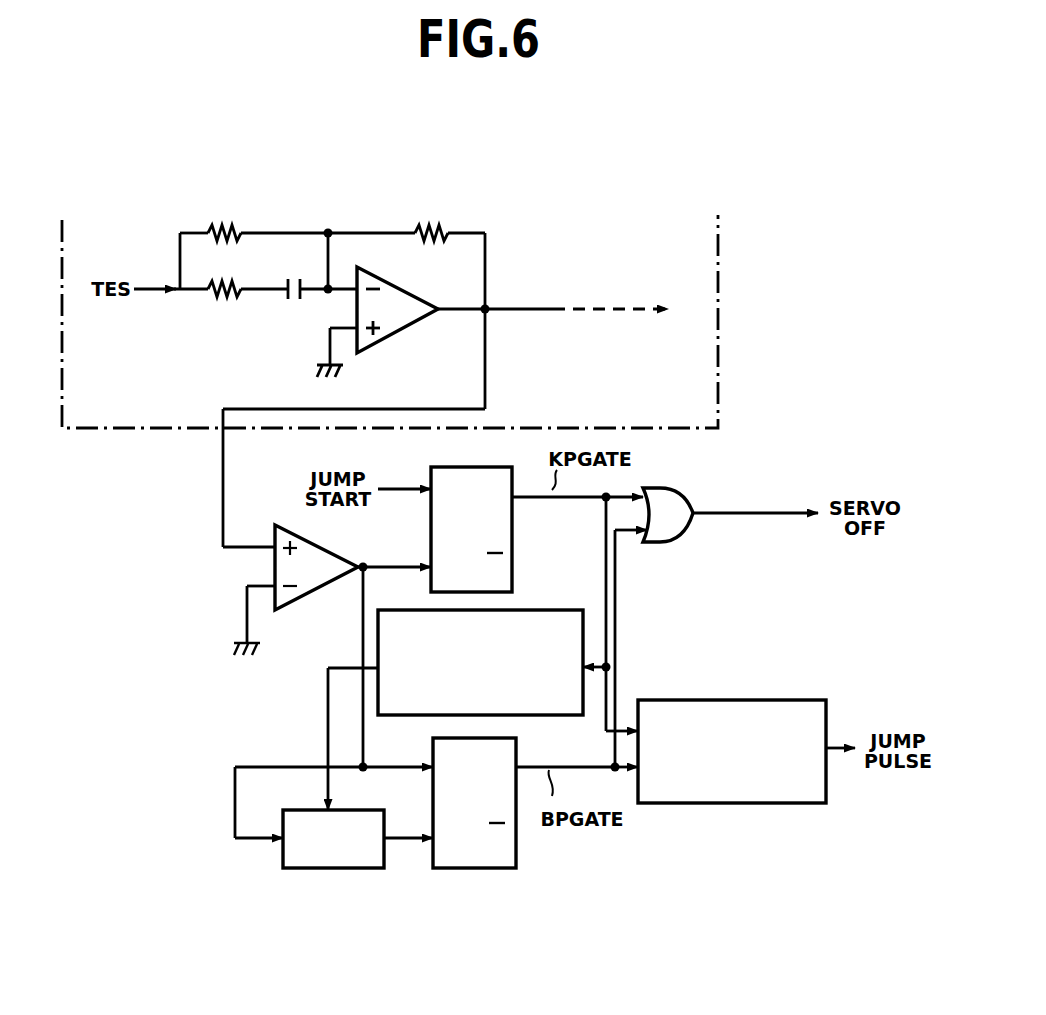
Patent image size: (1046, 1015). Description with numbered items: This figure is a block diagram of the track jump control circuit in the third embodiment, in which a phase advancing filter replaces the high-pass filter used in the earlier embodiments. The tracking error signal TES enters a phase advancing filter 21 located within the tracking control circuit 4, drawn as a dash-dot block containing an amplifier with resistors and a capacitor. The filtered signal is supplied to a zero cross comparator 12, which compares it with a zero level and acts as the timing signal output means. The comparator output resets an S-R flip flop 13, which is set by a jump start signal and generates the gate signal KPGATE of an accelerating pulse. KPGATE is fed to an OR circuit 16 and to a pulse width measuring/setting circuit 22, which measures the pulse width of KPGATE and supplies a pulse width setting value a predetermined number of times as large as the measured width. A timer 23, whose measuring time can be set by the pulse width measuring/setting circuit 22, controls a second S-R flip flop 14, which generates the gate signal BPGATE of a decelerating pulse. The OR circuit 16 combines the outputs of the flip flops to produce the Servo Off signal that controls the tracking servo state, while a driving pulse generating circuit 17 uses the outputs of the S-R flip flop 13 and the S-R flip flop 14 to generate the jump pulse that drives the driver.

The tracking control circuit 4 is at (718, 396).
The phase advancing filter 21 is at (486, 262).
The zero cross comparator 12 is at (275, 526).
The S-R flip flop 13 is at (464, 467).
The OR circuit 16 is at (690, 490).
The pulse width measuring/setting circuit 22 is at (545, 610).
The driving pulse generating circuit 17 is at (745, 700).
The timer 23 is at (303, 868).
The S-R flip flop 14 is at (470, 868).